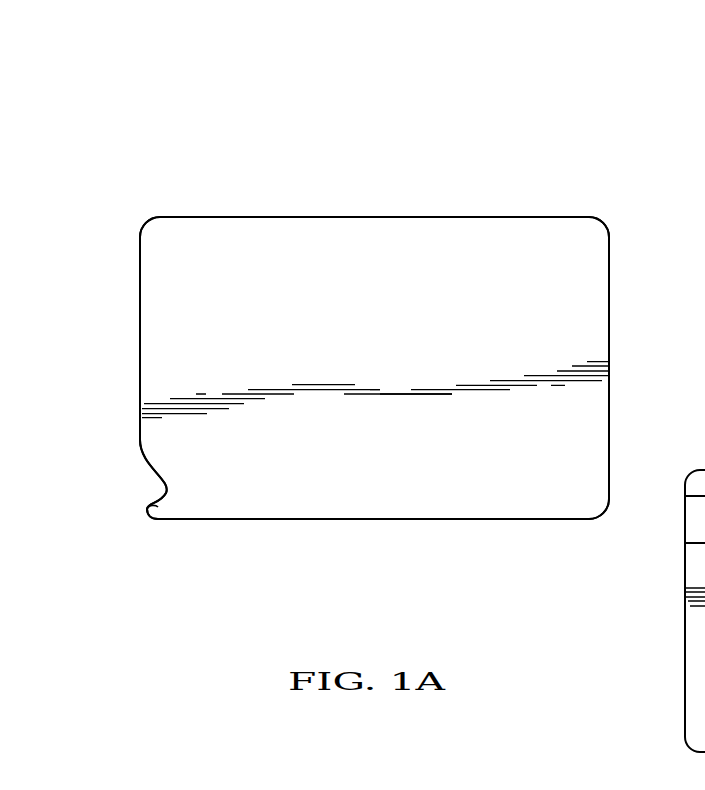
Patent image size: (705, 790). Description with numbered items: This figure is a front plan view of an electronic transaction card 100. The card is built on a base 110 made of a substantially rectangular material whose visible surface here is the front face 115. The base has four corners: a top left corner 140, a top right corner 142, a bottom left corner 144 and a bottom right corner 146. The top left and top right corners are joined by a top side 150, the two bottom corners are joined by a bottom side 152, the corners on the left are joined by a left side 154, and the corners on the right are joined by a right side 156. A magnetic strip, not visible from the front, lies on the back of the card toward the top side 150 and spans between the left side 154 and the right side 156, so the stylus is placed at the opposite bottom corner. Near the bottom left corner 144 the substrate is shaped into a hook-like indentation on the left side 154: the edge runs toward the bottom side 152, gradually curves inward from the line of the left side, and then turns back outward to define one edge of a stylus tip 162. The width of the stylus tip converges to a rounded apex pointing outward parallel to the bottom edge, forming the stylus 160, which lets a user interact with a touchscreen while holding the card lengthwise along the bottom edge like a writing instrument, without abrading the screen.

The electronic transaction card 100 is at (465, 94).
The base 110 is at (501, 242).
The front face 115 is at (381, 336).
The top left corner 140 is at (147, 222).
The top right corner 142 is at (604, 224).
The bottom left corner 144 is at (135, 528).
The bottom right corner 146 is at (603, 515).
The top side 150 is at (349, 216).
The bottom side 152 is at (366, 520).
The left side 154 is at (140, 348).
The right side 156 is at (609, 335).
The stylus 160 is at (175, 490).
The stylus tip 162 is at (147, 508).